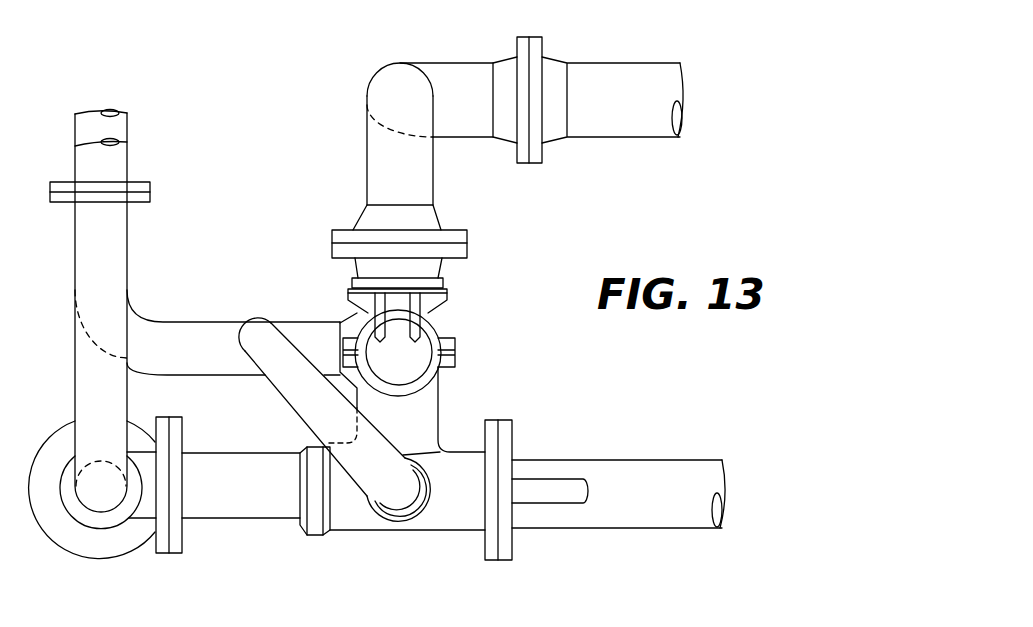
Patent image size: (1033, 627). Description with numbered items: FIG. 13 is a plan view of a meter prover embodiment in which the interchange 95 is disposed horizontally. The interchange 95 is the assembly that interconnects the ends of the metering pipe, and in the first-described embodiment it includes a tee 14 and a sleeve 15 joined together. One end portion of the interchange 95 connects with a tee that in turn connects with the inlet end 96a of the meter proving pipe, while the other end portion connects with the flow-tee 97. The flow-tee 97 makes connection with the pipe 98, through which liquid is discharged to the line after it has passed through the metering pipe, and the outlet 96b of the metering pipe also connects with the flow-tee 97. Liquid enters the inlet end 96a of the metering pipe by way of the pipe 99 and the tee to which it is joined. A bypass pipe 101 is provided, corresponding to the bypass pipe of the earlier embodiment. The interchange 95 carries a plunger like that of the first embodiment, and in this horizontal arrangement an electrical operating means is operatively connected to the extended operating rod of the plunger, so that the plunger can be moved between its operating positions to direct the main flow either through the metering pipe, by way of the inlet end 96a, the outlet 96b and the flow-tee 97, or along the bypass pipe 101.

The tee 14 is at (462, 525).
The sleeve 15 is at (270, 517).
The interchange 95 is at (351, 545).
The inlet end of the meter proving pipe 96a is at (670, 433).
The outlet of the metering pipe 96b is at (473, 50).
The flow-tee 97 is at (462, 337).
The pipe 98 is at (191, 331).
The pipe 99 is at (118, 252).
The bypass pipe 101 is at (290, 412).